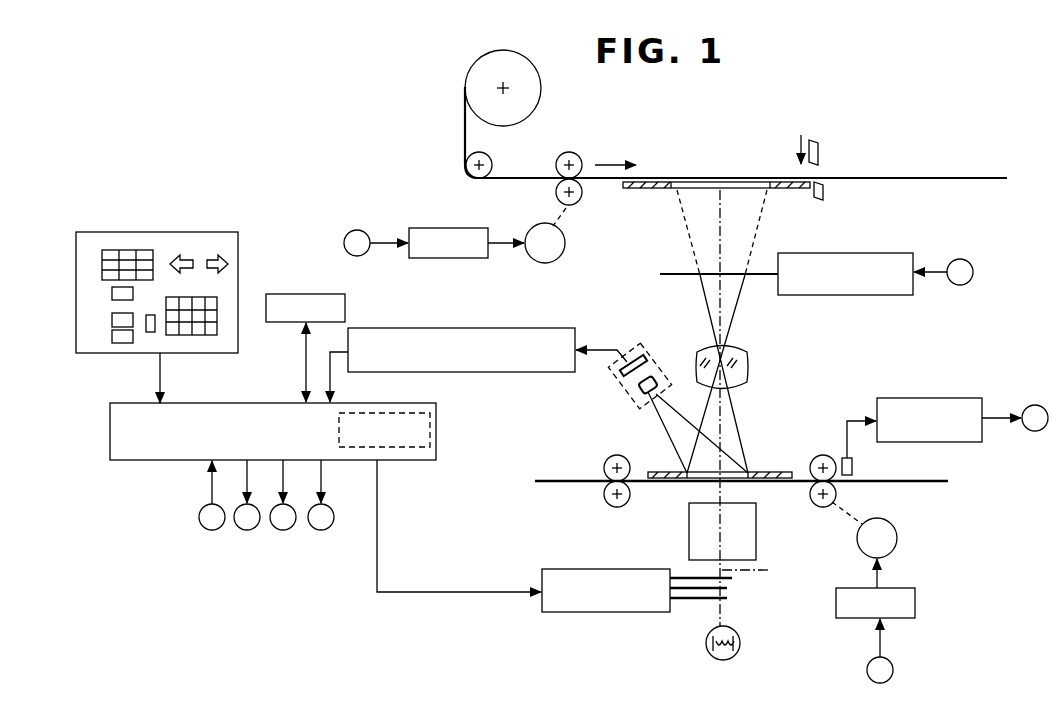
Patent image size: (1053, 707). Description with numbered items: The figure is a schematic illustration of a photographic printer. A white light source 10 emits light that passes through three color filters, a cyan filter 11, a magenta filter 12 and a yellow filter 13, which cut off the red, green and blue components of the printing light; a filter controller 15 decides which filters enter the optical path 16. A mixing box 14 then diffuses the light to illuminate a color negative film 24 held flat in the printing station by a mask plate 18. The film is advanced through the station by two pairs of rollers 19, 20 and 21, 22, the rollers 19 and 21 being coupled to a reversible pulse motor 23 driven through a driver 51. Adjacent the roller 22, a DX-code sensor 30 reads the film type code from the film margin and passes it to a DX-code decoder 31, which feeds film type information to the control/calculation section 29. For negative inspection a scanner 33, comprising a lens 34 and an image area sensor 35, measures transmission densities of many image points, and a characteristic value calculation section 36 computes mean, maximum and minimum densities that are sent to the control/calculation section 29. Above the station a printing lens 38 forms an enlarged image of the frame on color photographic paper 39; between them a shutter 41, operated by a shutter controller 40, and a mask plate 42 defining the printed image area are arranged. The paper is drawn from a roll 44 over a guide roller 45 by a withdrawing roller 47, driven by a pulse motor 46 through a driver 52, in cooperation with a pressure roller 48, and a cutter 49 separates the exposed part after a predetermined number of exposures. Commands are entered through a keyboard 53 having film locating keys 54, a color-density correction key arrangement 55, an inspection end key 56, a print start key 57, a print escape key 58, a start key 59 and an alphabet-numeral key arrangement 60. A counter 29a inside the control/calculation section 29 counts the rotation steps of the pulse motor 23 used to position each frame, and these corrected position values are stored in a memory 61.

The white light source 10 is at (742, 648).
The cyan color filter 11 is at (705, 601).
The magenta color filter 12 is at (690, 591).
The yellow color filter 13 is at (736, 580).
The mixing box 14 is at (745, 538).
The filter controller 15 is at (592, 613).
The optical path 16 is at (759, 569).
The mask plate 18 is at (928, 484).
The roller 19 is at (618, 507).
The roller 20 is at (611, 456).
The roller 21 is at (838, 491).
The roller 22 is at (822, 455).
The reversible electric pulse motor 23 is at (898, 542).
The color negative film 24 is at (770, 471).
The control/calculation section 29 is at (140, 462).
The counter 29a is at (390, 448).
The DX-code sensor 30 is at (853, 466).
The DX-code decoder 31 is at (928, 398).
The scanner 33 is at (656, 349).
The lens 34 is at (645, 398).
The image area sensor 35 is at (629, 357).
The characteristic value calculation section 36 is at (462, 328).
The printing lens 38 is at (747, 351).
The color photographic paper 39 is at (917, 173).
The shutter controller 40 is at (862, 253).
The shutter 41 is at (664, 270).
The mask plate 42 is at (796, 190).
The roll 44 is at (466, 78).
The guide roller 45 is at (466, 160).
The pulse motor 46 is at (563, 257).
The withdrawing roller 47 is at (580, 203).
The pressure roller 48 is at (570, 152).
The cutter 49 is at (818, 142).
The driver 51 is at (915, 605).
The driver 52 is at (445, 228).
The keyboard 53 is at (163, 232).
The film locating keys 54 is at (216, 257).
The color-density correction key arrangement 55 is at (126, 255).
The inspection end key 56 is at (112, 294).
The print start key 57 is at (112, 320).
The print escape key 58 is at (112, 337).
The start key 59 is at (150, 332).
The alphabet-numeral key arrangement 60 is at (205, 335).
The memory 61 is at (300, 292).